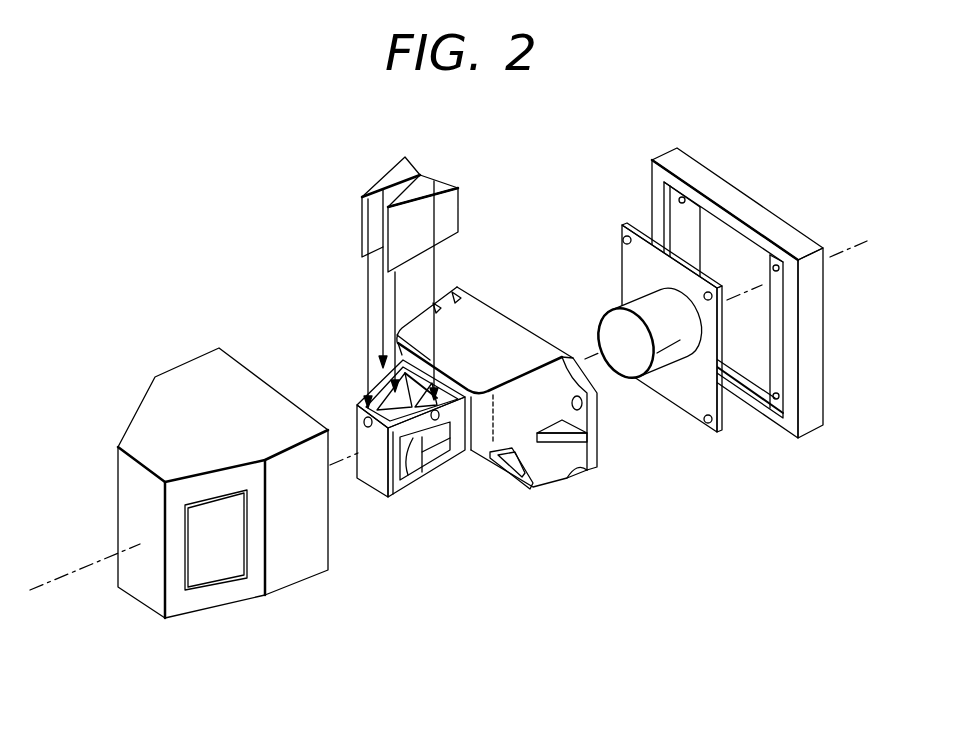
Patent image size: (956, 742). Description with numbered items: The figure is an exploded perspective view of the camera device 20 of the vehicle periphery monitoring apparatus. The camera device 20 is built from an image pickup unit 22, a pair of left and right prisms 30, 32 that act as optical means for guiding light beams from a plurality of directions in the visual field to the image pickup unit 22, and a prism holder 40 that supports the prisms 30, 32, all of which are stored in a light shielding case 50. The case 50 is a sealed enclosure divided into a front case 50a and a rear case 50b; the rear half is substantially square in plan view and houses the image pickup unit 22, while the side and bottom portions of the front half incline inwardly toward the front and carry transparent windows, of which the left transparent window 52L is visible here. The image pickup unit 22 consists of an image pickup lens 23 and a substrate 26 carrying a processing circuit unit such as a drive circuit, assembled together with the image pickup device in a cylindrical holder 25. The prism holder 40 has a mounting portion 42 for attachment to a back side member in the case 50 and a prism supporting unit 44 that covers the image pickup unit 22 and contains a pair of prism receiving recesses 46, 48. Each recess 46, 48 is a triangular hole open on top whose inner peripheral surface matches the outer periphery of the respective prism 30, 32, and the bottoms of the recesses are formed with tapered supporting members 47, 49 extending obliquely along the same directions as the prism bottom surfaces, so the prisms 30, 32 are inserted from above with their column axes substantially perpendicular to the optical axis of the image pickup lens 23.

The camera device 20 is at (318, 191).
The image pickup unit 22 is at (588, 246).
The image pickup lens 23 is at (623, 365).
The cylindrical holder 25 is at (613, 310).
The substrate 26 is at (698, 412).
The prism 30 is at (443, 182).
The prism 32 is at (390, 177).
The prism holder 40 is at (482, 276).
The mounting portion 42 is at (548, 480).
The prism supporting unit 44 is at (437, 470).
The prism receiving recess 46 is at (447, 392).
The tapered supporting member 47 is at (430, 465).
The prism receiving recess 48 is at (402, 345).
The tapered supporting member 49 is at (422, 422).
The light shielding case 50 is at (877, 480).
The front case 50a is at (259, 516).
The rear case 50b is at (808, 440).
The transparent window 52L is at (205, 566).